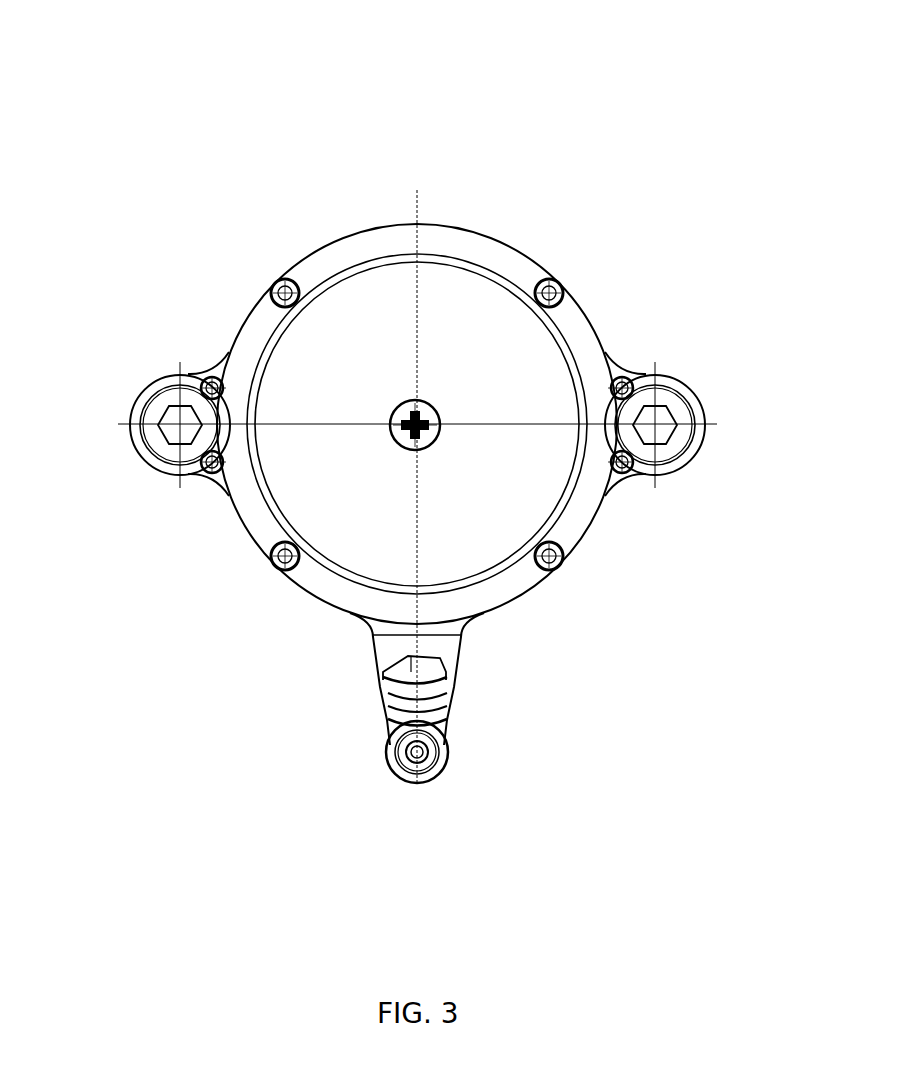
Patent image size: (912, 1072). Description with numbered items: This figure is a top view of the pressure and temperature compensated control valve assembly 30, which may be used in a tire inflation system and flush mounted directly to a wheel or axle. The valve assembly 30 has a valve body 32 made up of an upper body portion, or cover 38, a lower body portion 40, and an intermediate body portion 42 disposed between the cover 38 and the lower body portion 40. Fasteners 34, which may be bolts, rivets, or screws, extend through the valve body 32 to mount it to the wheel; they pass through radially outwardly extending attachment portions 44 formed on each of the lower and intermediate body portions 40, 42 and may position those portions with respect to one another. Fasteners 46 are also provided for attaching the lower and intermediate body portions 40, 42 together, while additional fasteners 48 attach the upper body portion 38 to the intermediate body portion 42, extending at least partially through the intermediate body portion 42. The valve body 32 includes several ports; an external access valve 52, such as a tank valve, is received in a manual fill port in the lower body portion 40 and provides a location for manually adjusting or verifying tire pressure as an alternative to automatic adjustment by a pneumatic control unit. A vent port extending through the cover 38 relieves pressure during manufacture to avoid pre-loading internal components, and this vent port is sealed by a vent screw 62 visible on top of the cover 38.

The valve assembly 30 is at (724, 144).
The valve body 32 is at (483, 203).
The fasteners 34 is at (678, 415).
The upper body portion 38 is at (487, 547).
The lower body portion 40 is at (388, 652).
The intermediate body portion 42 is at (193, 472).
The attachment portions 44 is at (140, 393).
The fasteners 46 is at (633, 473).
The additional fasteners 48 is at (565, 285).
The external access valve 52 is at (445, 745).
The vent screw 62 is at (403, 403).